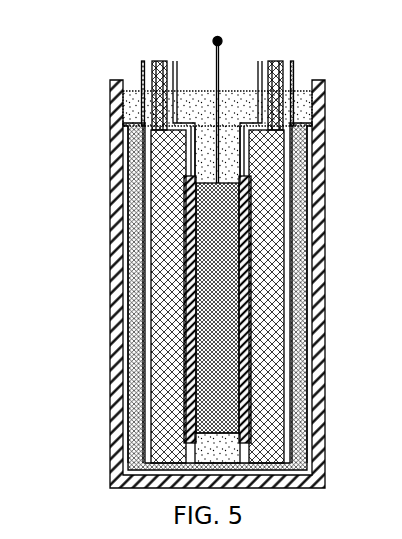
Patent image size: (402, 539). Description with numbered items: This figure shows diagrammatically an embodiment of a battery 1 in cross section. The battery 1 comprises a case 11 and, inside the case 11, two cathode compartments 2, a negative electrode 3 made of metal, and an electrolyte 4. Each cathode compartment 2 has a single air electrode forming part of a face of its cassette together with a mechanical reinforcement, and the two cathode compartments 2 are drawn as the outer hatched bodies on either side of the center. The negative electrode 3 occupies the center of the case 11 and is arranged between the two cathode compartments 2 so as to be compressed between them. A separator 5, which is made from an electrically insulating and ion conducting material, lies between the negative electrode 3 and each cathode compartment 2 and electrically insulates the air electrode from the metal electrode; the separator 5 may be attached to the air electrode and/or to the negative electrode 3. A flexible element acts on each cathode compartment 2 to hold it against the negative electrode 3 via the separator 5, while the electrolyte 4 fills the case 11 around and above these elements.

The battery 1 is at (66, 89).
The cathode compartment 2 is at (101, 218).
The negative electrode 3 is at (244, 318).
The electrolyte 4 is at (238, 105).
The separator 5 is at (180, 398).
The case 11 is at (101, 273).